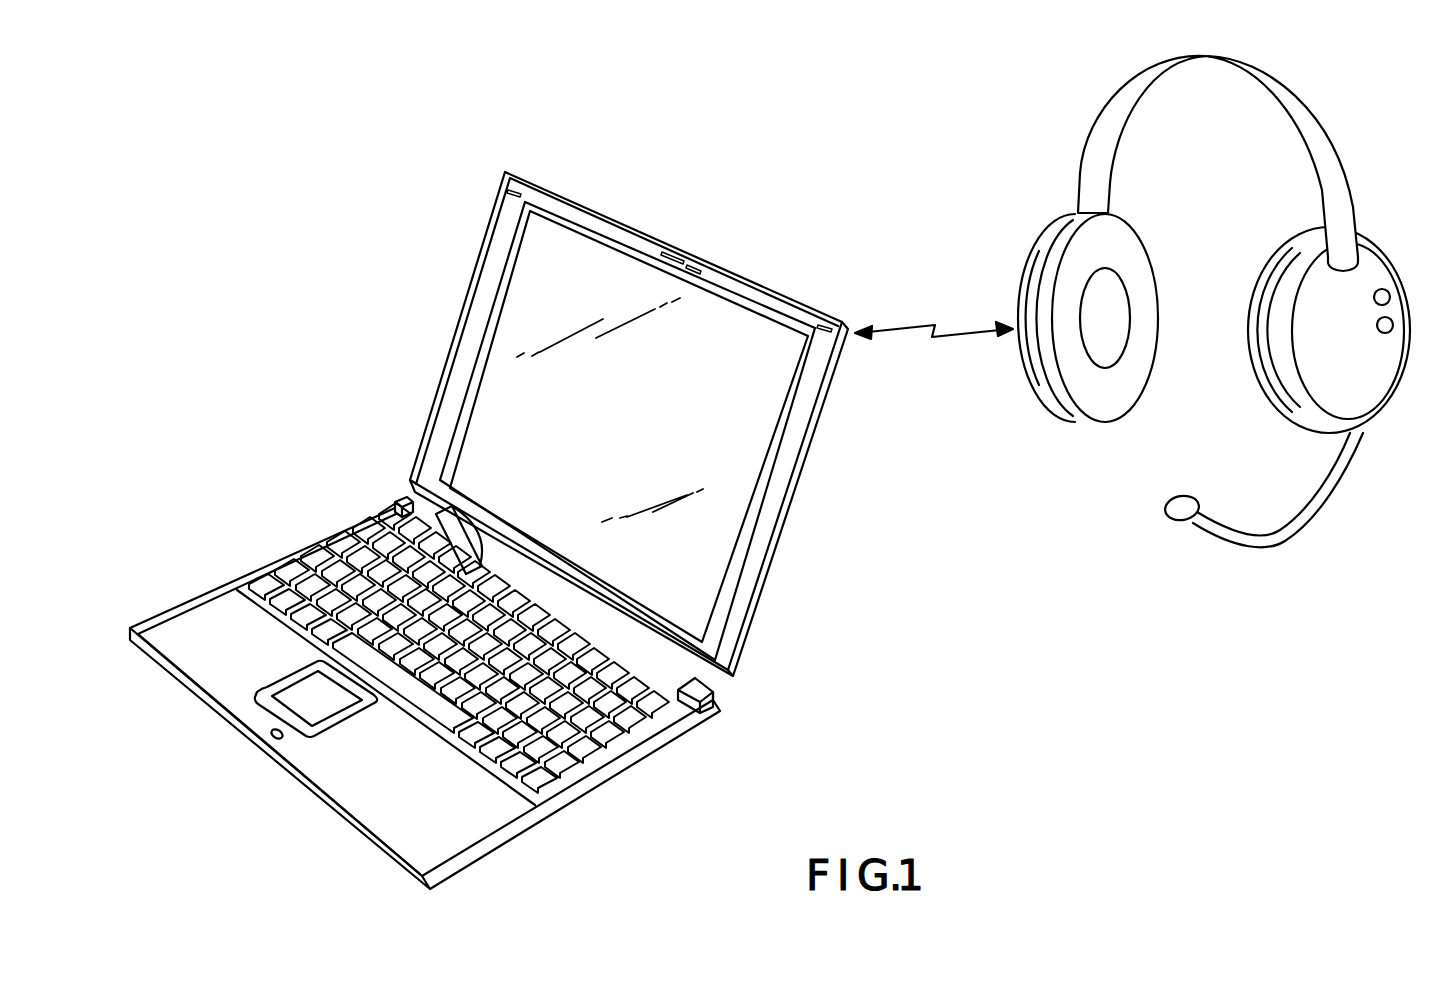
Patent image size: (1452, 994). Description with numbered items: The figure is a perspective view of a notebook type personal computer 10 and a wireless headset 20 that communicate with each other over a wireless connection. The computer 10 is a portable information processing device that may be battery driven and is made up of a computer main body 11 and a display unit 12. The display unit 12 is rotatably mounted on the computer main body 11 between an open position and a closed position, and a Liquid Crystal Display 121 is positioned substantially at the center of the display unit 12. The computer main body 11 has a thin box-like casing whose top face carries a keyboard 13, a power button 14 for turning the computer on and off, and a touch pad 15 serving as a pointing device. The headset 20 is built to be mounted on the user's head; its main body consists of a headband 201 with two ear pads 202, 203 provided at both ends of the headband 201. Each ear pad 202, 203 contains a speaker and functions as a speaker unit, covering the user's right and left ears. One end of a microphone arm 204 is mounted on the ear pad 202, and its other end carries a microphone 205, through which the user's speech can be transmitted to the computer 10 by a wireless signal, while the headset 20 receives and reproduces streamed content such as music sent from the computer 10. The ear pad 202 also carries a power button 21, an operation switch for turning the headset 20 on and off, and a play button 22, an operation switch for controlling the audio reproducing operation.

The notebook type personal computer 10 is at (659, 820).
The computer main body 11 is at (360, 826).
The display unit 12 is at (482, 302).
The Liquid Crystal Display 121 is at (735, 508).
The keyboard 13 is at (287, 566).
The power button 14 is at (480, 562).
The touch pad 15 is at (297, 688).
The wireless headset 20 is at (1346, 73).
The headband 201 is at (1338, 148).
The ear pad 202 is at (1367, 422).
The ear pad 203 is at (1122, 405).
The microphone arm 204 is at (1282, 530).
The microphone 205 is at (1183, 503).
The power button 21 is at (1391, 297).
The play button 22 is at (1393, 327).